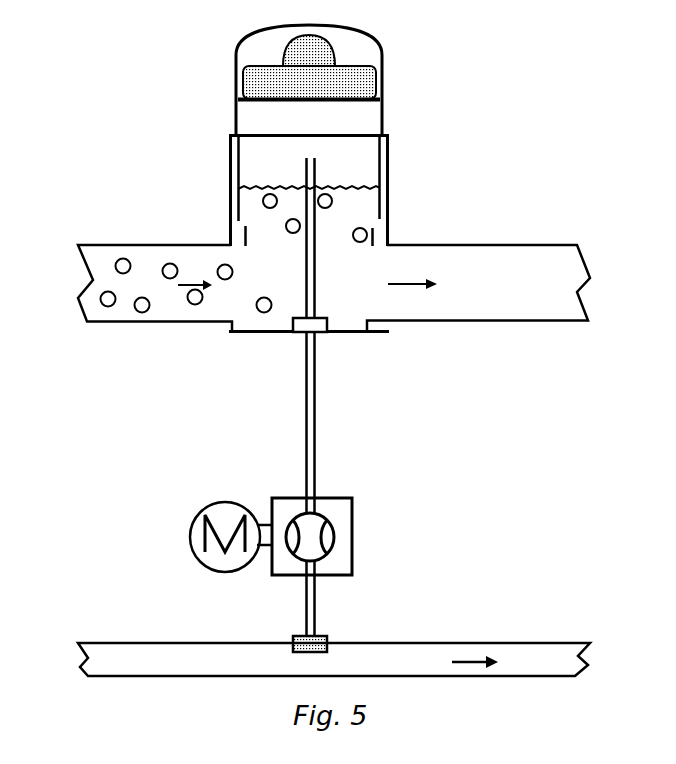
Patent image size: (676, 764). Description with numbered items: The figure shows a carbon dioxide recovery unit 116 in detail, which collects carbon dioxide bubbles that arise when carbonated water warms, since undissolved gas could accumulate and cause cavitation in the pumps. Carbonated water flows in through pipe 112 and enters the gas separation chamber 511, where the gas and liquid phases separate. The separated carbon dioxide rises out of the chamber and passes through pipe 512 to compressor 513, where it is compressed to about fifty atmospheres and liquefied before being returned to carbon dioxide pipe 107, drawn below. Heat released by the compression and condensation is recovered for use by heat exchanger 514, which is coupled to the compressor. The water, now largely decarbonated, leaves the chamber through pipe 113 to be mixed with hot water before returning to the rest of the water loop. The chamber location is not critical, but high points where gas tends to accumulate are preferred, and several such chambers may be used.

The carbon dioxide recovery unit 116 is at (113, 90).
The pipe 112 is at (93, 243).
The pipe 113 is at (491, 243).
The gas separation chamber 511 is at (273, 334).
The pipe 512 is at (305, 438).
The compressor 513 is at (350, 498).
The heat exchanger 514 is at (193, 550).
The carbon dioxide pipe 107 is at (470, 643).